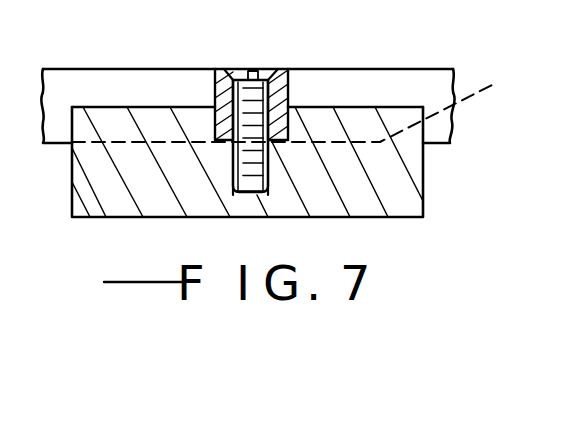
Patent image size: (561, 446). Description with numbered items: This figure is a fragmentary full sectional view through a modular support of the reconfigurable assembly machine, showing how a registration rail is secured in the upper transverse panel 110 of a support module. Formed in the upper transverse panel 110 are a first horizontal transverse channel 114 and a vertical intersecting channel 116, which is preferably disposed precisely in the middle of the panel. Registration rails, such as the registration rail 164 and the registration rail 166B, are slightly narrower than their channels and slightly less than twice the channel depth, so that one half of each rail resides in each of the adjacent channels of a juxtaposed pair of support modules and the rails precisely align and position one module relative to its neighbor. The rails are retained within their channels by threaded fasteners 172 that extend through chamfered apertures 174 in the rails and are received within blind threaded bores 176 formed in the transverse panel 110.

The upper transverse panel 110 is at (410, 170).
The first horizontal transverse slot or channel 114 is at (310, 106).
The vertical intersecting slot or channel 116 is at (216, 130).
The registration bar or rail 164 is at (432, 84).
The registration bar or rail 166B is at (282, 90).
The threaded fastener 172 is at (244, 90).
The chamfered aperture 174 is at (232, 78).
The blind threaded bore 176 is at (250, 182).